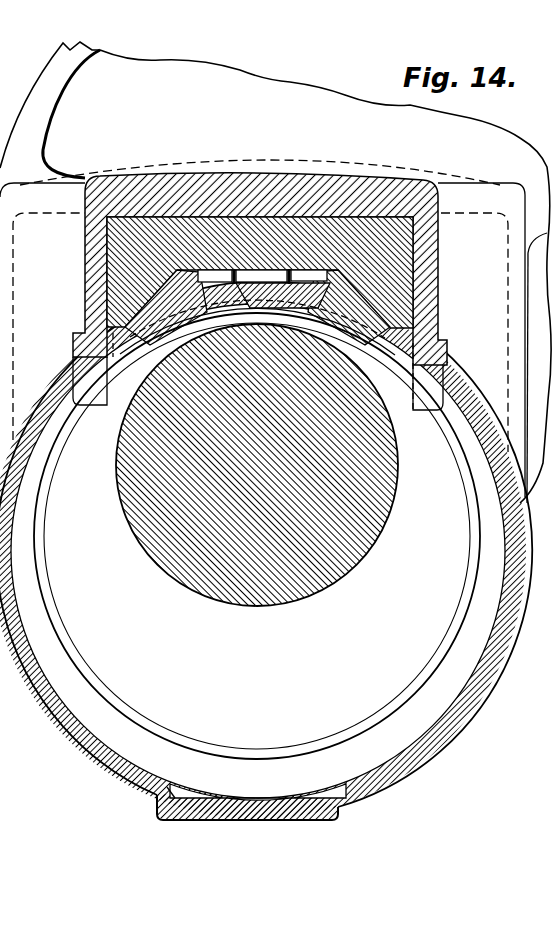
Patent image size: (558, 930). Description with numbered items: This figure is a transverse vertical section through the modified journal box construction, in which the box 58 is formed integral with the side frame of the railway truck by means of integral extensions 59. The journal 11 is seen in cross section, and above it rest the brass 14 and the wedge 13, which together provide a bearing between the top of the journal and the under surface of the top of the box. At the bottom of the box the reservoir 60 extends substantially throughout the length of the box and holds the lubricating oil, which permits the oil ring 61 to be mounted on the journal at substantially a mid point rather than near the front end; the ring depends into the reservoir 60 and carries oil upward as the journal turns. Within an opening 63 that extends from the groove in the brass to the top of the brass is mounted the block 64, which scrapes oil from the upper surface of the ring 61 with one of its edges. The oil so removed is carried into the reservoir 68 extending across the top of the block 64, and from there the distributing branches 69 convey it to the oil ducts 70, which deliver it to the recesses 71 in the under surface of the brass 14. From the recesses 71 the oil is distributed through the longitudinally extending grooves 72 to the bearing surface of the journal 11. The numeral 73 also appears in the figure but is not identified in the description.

The journal 11 is at (383, 490).
The wedge 13 is at (440, 237).
The brass 14 is at (345, 310).
The box 58 is at (85, 242).
The integral extensions 59 is at (293, 85).
The reservoir 60 is at (343, 767).
The oil ring 61 is at (40, 490).
The opening 63 is at (272, 268).
The block 64 is at (238, 268).
The reservoir 68 is at (210, 268).
The distributing branches 69 is at (165, 302).
The oil ducts 70 is at (125, 341).
The recesses 71 is at (113, 371).
The longitudinally extending grooves 72 is at (123, 387).
The base 73 is at (11, 761).